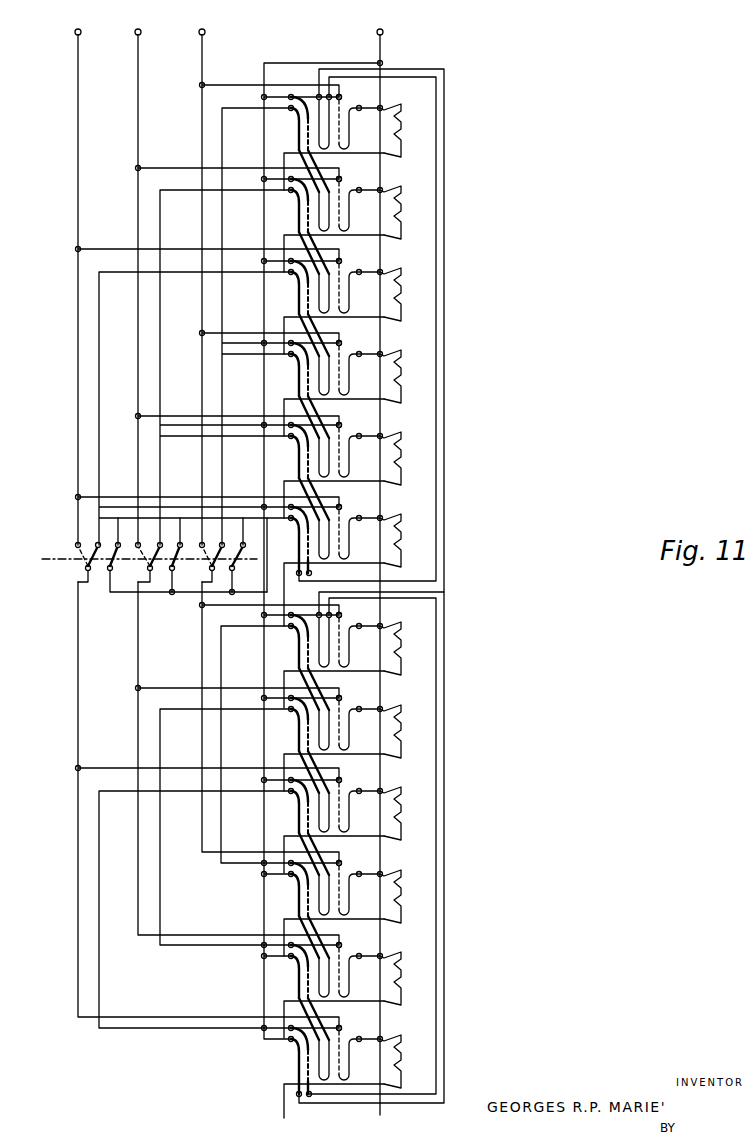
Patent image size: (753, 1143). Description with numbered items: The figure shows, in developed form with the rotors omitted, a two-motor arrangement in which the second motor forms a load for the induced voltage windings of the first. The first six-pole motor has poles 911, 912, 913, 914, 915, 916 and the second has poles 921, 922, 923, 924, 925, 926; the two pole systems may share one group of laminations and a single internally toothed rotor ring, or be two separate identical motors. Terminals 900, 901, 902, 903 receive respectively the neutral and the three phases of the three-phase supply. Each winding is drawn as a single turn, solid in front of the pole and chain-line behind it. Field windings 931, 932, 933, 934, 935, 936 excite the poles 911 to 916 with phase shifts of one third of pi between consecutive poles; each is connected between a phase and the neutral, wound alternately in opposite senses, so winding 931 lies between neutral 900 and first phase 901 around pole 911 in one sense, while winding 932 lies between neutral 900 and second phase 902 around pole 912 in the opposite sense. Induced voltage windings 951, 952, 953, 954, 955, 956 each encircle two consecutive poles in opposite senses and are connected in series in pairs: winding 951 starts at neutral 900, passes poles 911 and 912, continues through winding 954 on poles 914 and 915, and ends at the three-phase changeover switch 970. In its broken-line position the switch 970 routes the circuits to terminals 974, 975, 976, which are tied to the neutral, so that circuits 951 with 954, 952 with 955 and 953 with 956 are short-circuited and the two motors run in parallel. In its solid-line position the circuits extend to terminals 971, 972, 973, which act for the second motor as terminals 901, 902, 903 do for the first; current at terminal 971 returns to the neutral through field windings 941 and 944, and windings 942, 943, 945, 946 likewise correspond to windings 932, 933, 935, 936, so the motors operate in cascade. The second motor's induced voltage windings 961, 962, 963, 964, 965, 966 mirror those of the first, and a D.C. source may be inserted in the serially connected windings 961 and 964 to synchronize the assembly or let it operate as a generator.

The neutral terminal 900 is at (377, 33).
The first phase terminal 901 is at (199, 33).
The second phase terminal 902 is at (135, 33).
The third phase terminal 903 is at (75, 33).
The pole 911 is at (398, 109).
The pole 912 is at (398, 191).
The pole 913 is at (398, 273).
The pole 914 is at (398, 355).
The pole 915 is at (398, 437).
The pole 916 is at (398, 519).
The pole 921 is at (398, 627).
The pole 922 is at (398, 710).
The pole 923 is at (398, 792).
The pole 924 is at (398, 875).
The pole 925 is at (398, 957).
The pole 926 is at (398, 1040).
The field winding 931 is at (347, 106).
The field winding 932 is at (347, 188).
The field winding 933 is at (347, 270).
The field winding 934 is at (347, 352).
The field winding 935 is at (347, 434).
The field winding 936 is at (347, 516).
The field winding 941 is at (347, 624).
The field winding 942 is at (347, 707).
The field winding 943 is at (347, 789).
The field winding 944 is at (347, 872).
The field winding 945 is at (347, 954).
The field winding 946 is at (347, 1037).
The induced voltage winding 951 is at (299, 139).
The induced voltage winding 952 is at (299, 221).
The induced voltage winding 953 is at (299, 303).
The induced voltage winding 954 is at (299, 385).
The induced voltage winding 955 is at (299, 467).
The induced voltage winding 956 is at (299, 549).
The induced voltage winding 961 is at (299, 657).
The induced voltage winding 962 is at (299, 740).
The induced voltage winding 963 is at (299, 822).
The induced voltage winding 964 is at (299, 905).
The induced voltage winding 965 is at (299, 987).
The induced voltage winding 966 is at (299, 1070).
The three-phase changeover switch 970 is at (135, 559).
The terminal 971 is at (209, 571).
The terminal 972 is at (147, 571).
The terminal 973 is at (85, 571).
The terminal 974 is at (235, 571).
The terminal 975 is at (170, 578).
The terminal 976 is at (108, 578).